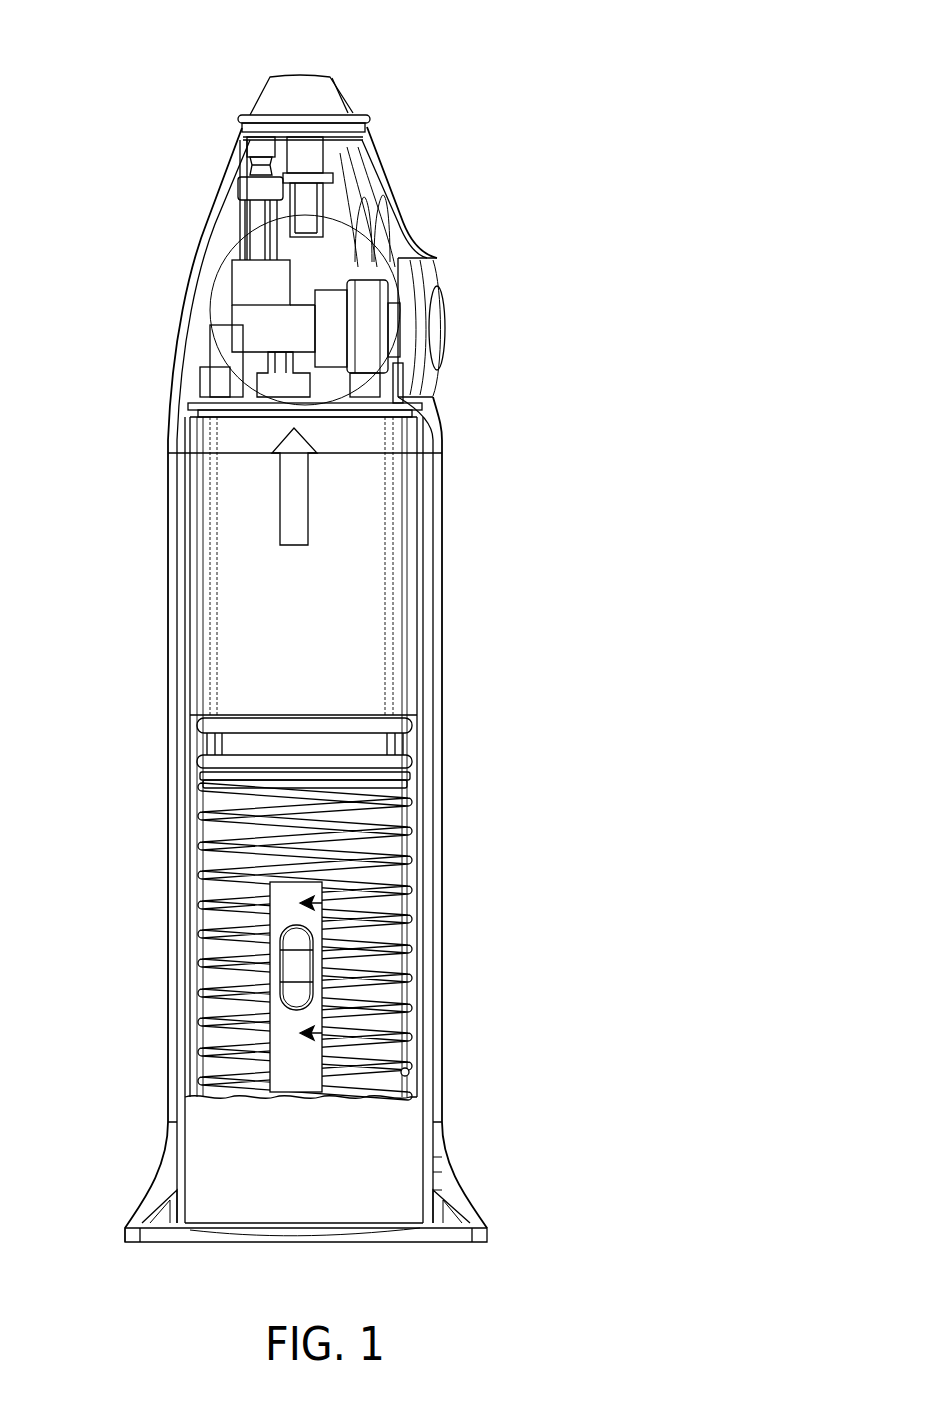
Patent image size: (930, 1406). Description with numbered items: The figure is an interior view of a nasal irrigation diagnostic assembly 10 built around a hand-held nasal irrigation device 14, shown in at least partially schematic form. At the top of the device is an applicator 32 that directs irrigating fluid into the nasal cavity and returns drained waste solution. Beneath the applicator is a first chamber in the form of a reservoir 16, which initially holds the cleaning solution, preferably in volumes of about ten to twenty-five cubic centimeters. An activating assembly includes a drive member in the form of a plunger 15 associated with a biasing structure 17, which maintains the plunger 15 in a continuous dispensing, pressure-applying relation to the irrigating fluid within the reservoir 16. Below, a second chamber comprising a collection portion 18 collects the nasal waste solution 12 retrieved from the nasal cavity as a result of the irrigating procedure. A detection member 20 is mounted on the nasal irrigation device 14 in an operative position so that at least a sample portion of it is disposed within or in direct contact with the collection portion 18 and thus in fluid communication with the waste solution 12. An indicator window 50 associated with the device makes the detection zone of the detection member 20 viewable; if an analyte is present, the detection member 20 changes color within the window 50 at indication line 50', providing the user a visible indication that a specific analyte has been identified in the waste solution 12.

The nasal irrigation diagnostic assembly 10 is at (549, 258).
The nasal waste solution 12 is at (215, 1165).
The nasal irrigation device 14 is at (445, 633).
The plunger 15 is at (383, 747).
The reservoir 16 is at (385, 543).
The biasing structure 17 is at (413, 807).
The collection portion 18 is at (409, 1072).
The detection member 20 is at (320, 1035).
The applicator 32 is at (371, 83).
The indicator window 50 is at (410, 941).
The indication line 50' is at (208, 968).